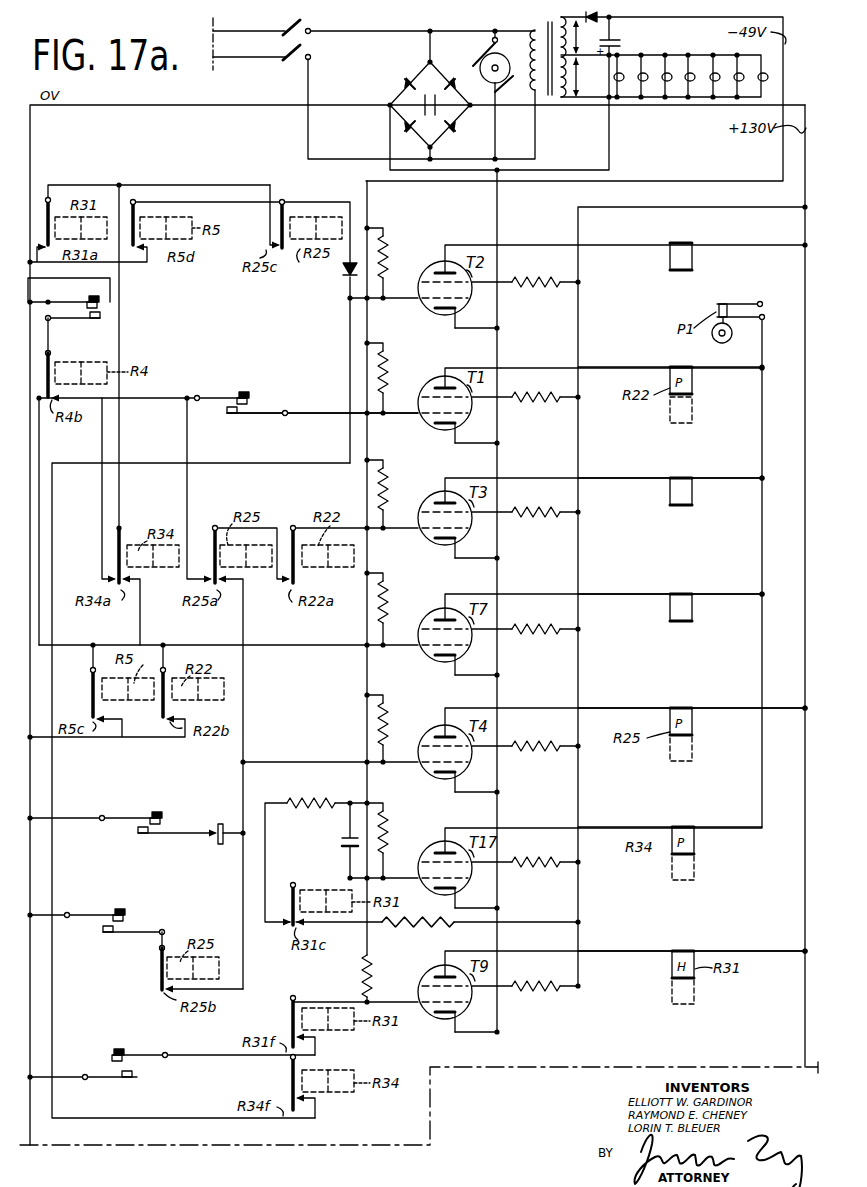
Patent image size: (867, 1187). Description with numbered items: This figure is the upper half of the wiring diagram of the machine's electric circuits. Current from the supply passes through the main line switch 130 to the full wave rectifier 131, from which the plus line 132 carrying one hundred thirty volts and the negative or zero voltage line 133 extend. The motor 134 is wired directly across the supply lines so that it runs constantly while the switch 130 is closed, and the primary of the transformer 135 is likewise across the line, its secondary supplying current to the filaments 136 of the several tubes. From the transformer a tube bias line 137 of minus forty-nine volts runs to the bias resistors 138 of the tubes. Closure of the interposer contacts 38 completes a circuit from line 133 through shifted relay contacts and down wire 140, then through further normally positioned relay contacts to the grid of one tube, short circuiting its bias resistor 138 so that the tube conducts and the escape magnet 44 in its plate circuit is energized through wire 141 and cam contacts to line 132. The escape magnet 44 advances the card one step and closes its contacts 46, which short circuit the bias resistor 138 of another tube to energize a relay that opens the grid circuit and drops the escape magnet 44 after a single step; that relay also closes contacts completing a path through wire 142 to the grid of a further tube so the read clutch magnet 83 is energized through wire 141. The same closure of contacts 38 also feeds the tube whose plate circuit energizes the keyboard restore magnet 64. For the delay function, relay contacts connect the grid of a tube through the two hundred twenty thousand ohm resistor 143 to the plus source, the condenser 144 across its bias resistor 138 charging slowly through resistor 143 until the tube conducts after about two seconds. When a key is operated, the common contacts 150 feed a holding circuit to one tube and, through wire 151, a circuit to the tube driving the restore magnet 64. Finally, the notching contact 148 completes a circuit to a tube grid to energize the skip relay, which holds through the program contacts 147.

The main line switch 130 is at (290, 32).
The full wave rectifier 131 is at (415, 78).
The plus line 132 is at (806, 447).
The negative or zero voltage line 133 is at (30, 152).
The motor 134 is at (483, 60).
The transformer 135 is at (544, 34).
The filaments 136 is at (764, 72).
The tube bias line 137 is at (746, 185).
The bias resistors 138 is at (388, 344).
The wire 140 is at (119, 453).
The wire 141 is at (762, 521).
The wire 142 is at (285, 648).
The 220,000 ohm resistor 143 is at (427, 926).
The condenser 144 is at (343, 842).
The program contacts 147 is at (127, 917).
The notching contact 148 is at (165, 821).
The common contacts 150 is at (112, 1057).
The wire 151 is at (265, 466).
The interposer contacts 38 is at (100, 310).
The escape magnet 44 is at (692, 500).
The contacts 46 is at (252, 397).
The keyboard restore magnet 64 is at (691, 265).
The read clutch magnet 83 is at (692, 607).